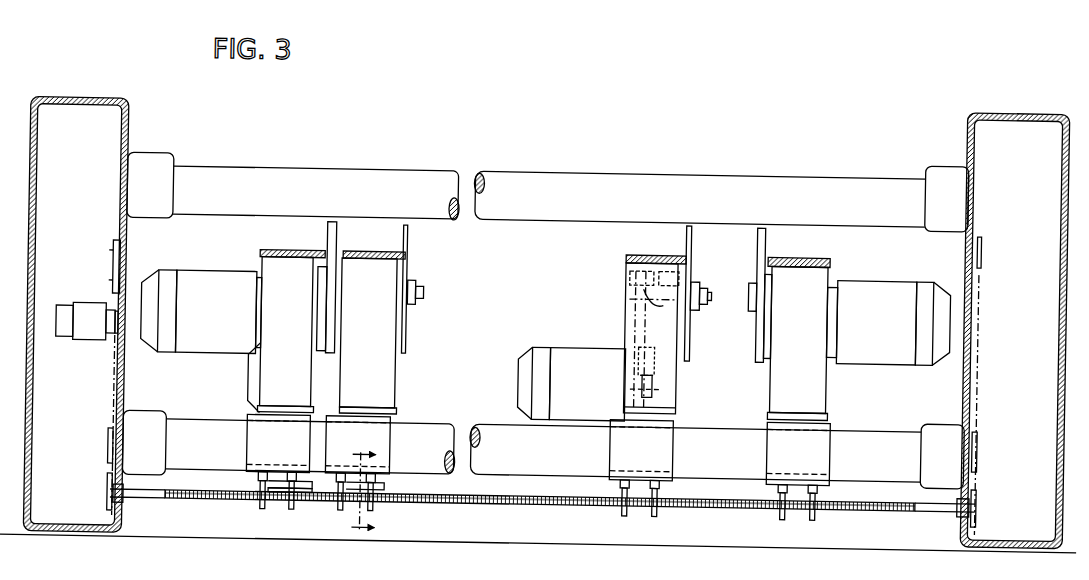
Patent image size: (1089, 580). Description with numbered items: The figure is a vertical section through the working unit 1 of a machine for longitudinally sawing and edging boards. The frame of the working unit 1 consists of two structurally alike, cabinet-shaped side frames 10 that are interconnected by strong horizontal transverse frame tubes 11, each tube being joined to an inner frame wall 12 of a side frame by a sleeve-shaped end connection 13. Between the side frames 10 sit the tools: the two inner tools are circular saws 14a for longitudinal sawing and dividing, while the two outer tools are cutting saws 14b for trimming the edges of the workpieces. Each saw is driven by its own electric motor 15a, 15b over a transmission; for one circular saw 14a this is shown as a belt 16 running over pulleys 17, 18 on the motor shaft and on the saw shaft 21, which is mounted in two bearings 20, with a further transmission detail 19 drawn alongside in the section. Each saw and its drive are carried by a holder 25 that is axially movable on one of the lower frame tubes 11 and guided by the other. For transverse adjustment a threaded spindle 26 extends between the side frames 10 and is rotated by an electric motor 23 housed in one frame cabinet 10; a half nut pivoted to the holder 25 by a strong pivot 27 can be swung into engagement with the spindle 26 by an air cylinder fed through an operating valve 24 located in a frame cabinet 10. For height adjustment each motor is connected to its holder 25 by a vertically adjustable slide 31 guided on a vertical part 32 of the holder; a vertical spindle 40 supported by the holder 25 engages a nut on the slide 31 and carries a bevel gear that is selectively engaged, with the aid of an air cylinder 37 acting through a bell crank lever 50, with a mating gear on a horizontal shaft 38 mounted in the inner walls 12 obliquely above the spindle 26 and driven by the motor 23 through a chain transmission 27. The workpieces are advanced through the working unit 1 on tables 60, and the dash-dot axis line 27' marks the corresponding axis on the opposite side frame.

The working unit 1 is at (1059, 136).
The side frame 10 is at (26, 213).
The frame tube 11 is at (213, 172).
The inner frame wall 12 is at (968, 140).
The sleeve-shaped end connection 13 is at (148, 162).
The circular saw 14a is at (403, 230).
The cutting saw 14b is at (332, 231).
The electric motor 15a is at (571, 348).
The electric motor 15b is at (188, 280).
The belt 16 is at (648, 350).
The pulley 17 is at (628, 397).
The pulley 18 is at (690, 318).
The coupling member 19 is at (655, 380).
The bearing 20 is at (621, 270).
The saw shaft 21 is at (699, 278).
The electric motor 23 is at (86, 339).
The operating valve 24 is at (111, 240).
The holder 25 is at (362, 435).
The threaded spindle 26 is at (436, 498).
The pivot 27 is at (91, 424).
The axis line 27' is at (999, 405).
The slide 31 is at (382, 357).
The vertical part 32 is at (982, 227).
The air cylinder 37 is at (283, 481).
The shaft 38 is at (114, 447).
The vertical spindle 40 is at (646, 411).
The bell crank lever 50 is at (395, 478).
The table 60 is at (285, 247).